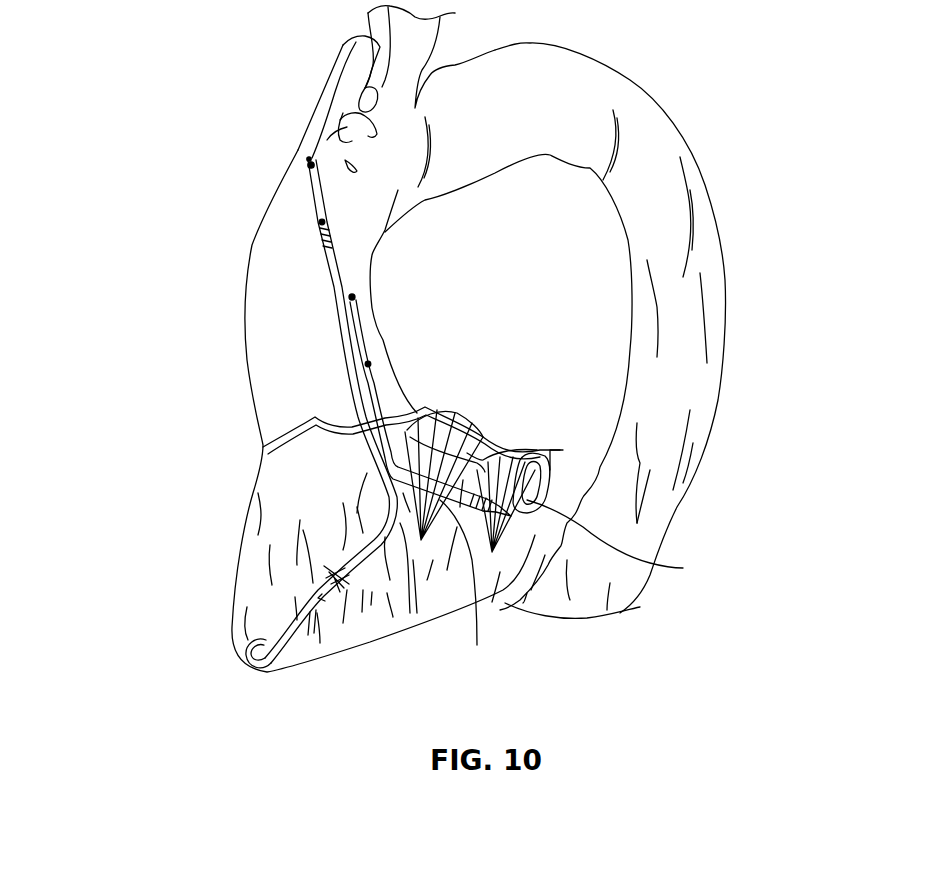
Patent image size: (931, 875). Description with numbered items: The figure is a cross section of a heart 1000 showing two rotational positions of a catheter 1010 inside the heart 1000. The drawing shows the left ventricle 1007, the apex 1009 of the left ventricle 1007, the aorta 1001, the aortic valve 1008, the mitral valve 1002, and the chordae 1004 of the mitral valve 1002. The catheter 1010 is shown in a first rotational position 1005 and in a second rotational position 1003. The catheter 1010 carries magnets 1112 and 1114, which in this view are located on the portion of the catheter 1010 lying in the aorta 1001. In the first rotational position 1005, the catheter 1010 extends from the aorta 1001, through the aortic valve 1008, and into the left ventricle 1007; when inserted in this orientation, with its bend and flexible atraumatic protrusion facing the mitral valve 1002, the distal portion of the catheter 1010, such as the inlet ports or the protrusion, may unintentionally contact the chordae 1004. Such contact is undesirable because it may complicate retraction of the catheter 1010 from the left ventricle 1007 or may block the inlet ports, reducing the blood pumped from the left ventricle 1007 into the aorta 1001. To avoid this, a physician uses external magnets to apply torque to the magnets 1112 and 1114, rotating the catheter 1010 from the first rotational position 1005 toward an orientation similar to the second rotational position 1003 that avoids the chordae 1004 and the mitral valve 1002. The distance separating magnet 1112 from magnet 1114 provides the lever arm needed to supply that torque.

The heart 1000 is at (140, 472).
The aorta 1001 is at (673, 193).
The mitral valve 1002 is at (443, 432).
The second rotational position 1003 is at (314, 197).
The chordae 1004 is at (598, 588).
The first rotational position 1005 is at (355, 312).
The left ventricle 1007 is at (243, 523).
The aortic valve 1008 is at (345, 420).
The apex 1009 is at (237, 653).
The catheter 1010 is at (335, 281).
The magnet 1112 is at (307, 164).
The magnet 1114 is at (320, 223).